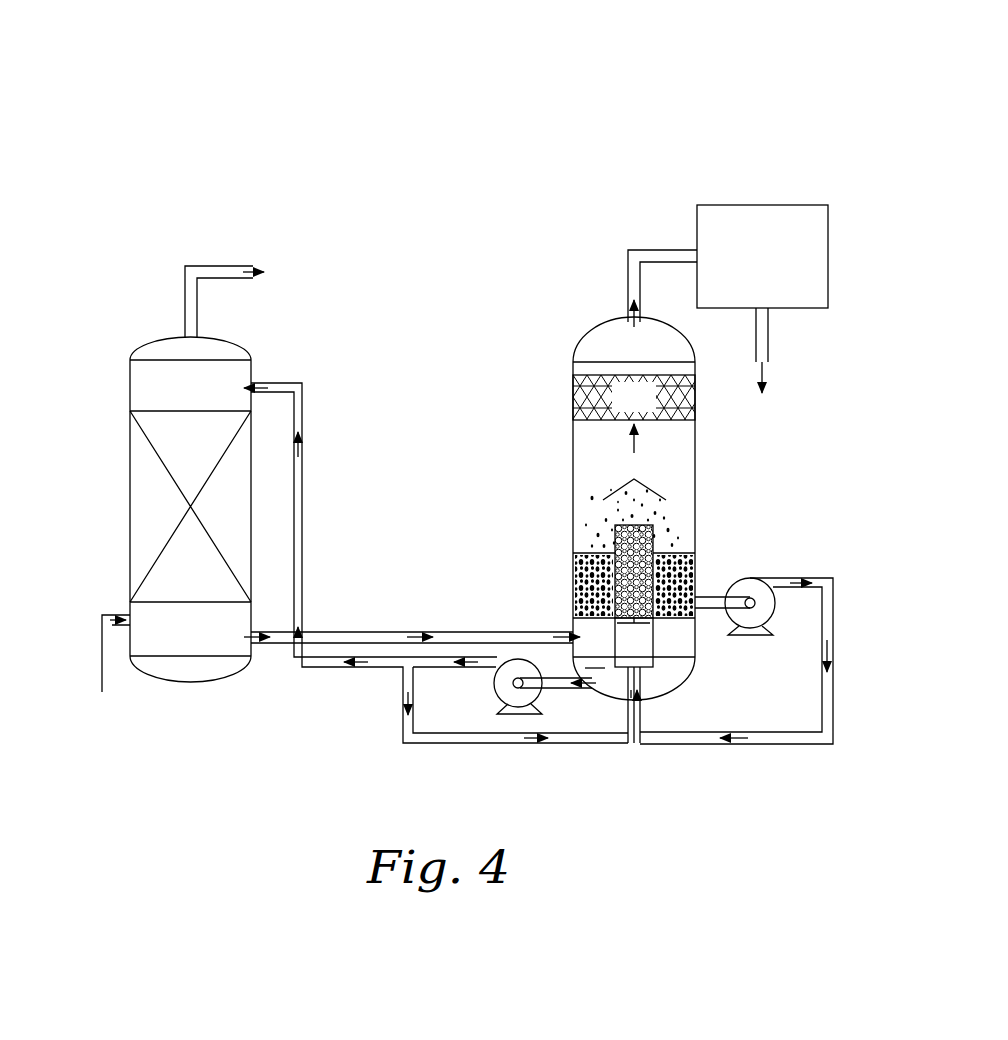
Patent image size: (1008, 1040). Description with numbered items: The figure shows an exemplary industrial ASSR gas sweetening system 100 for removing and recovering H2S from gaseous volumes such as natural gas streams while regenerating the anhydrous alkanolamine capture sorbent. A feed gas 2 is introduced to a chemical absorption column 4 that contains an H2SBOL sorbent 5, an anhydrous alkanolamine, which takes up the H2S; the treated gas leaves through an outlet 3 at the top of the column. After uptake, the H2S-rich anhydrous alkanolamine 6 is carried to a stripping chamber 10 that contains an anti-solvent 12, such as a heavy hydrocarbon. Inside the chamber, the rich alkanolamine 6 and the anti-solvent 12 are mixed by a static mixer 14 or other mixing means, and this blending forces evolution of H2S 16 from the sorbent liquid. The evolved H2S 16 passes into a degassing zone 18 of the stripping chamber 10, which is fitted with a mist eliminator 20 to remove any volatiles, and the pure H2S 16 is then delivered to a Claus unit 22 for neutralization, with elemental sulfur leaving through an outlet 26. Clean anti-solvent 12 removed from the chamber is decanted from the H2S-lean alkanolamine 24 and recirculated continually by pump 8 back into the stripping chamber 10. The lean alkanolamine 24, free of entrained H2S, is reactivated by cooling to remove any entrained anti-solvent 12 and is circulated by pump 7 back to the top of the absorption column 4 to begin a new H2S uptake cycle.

The ASSR gas sweetening system 100 is at (402, 100).
The chemical absorption column 4 is at (140, 276).
The treated gas outlet 3 is at (263, 268).
The feed gas 2 is at (109, 616).
The H2SBOL sorbent 5 is at (224, 648).
The H2S-rich anhydrous alkanolamine 6 is at (258, 630).
The H2S-lean alkanolamine 24 is at (257, 387).
The pump 7 is at (494, 687).
The stripping chamber 10 is at (586, 276).
The mist eliminator 20 is at (651, 410).
The H2S 16 is at (631, 436).
The degassing zone 18 is at (651, 548).
The anti-solvent 12 is at (572, 572).
The static mixer 14 is at (646, 626).
The pump 8 is at (763, 637).
The Claus unit 22 is at (779, 299).
The elemental sulfur outlet 26 is at (766, 364).